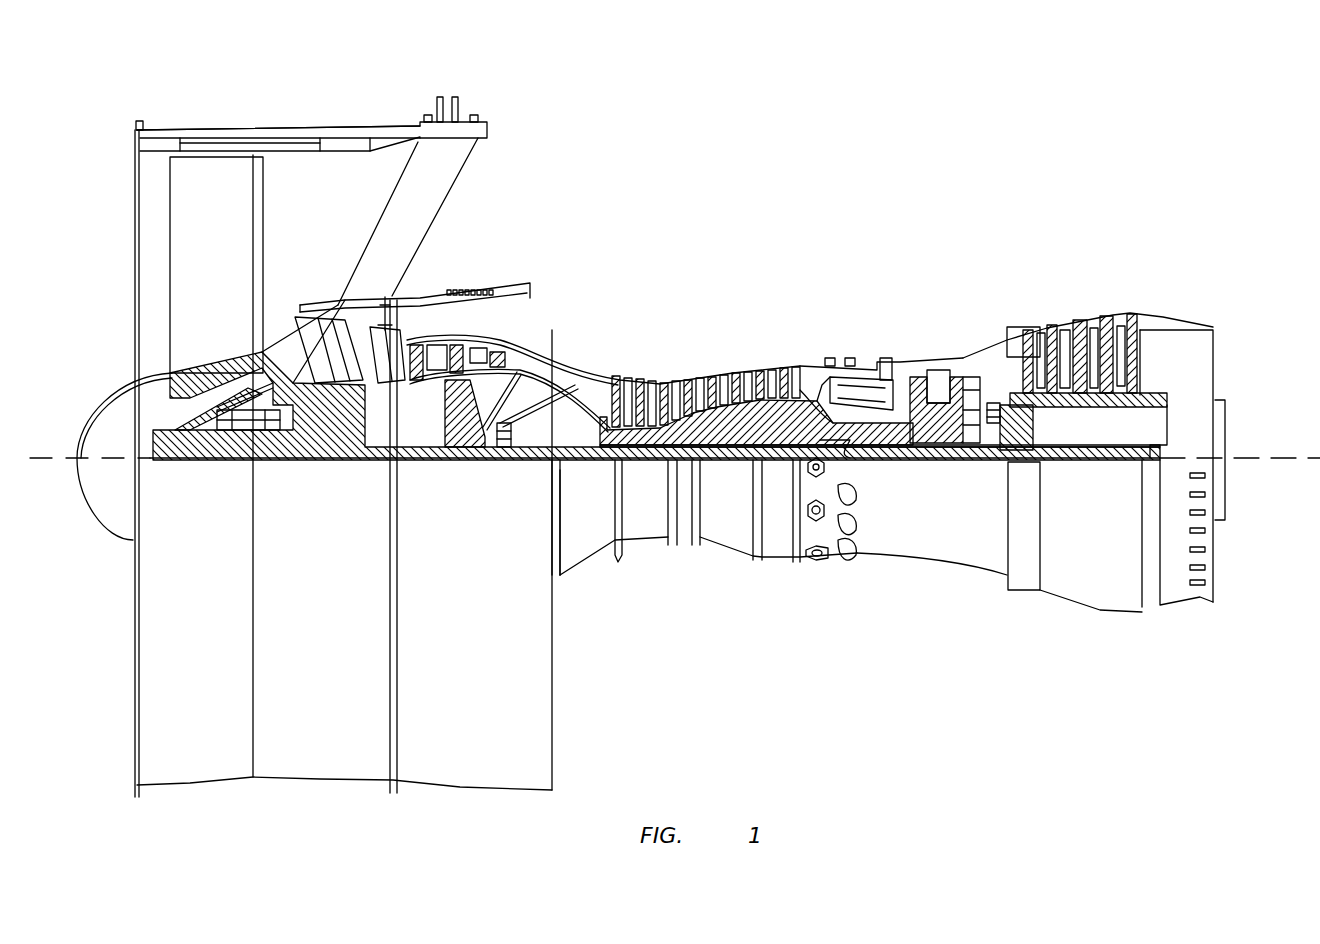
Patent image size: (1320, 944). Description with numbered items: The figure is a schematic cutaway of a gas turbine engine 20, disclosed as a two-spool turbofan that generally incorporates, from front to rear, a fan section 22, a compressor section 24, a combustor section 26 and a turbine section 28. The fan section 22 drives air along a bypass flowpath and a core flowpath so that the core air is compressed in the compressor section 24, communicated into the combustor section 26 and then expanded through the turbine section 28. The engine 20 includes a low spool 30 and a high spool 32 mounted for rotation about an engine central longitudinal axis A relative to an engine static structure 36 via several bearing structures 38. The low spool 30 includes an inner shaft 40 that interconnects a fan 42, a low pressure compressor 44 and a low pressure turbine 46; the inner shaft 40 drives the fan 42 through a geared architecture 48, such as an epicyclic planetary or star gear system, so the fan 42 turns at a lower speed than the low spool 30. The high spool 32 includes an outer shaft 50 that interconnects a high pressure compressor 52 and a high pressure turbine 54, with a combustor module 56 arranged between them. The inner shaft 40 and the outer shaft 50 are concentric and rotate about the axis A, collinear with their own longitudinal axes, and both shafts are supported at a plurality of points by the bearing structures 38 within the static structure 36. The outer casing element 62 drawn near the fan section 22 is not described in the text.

The gas turbine engine 20 is at (990, 190).
The fan section 22 is at (394, 110).
The compressor section 24 is at (400, 262).
The combustor section 26 is at (920, 262).
The turbine section 28 is at (1150, 262).
The low spool 30 is at (730, 470).
The high spool 32 is at (778, 420).
The engine static structure 36 is at (780, 553).
The bearing structures 38 is at (226, 437).
The inner shaft 40 is at (578, 462).
The fan 42 is at (233, 246).
The low pressure compressor 44 is at (477, 348).
The low pressure turbine 46 is at (1085, 337).
The geared architecture 48 is at (347, 437).
The outer shaft 50 is at (855, 450).
The high pressure compressor 52 is at (710, 418).
The high pressure turbine 54 is at (935, 368).
The combustor module 56 is at (852, 392).
The fan case 62 is at (396, 137).
The engine central longitudinal axis A is at (1262, 456).